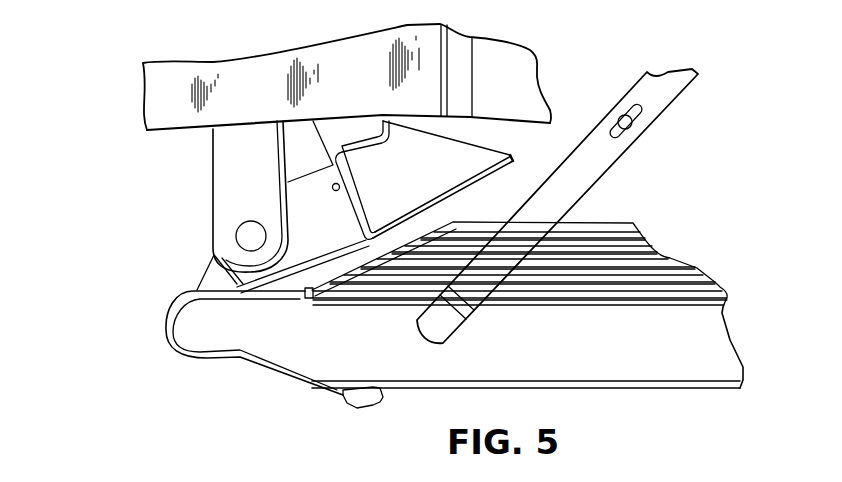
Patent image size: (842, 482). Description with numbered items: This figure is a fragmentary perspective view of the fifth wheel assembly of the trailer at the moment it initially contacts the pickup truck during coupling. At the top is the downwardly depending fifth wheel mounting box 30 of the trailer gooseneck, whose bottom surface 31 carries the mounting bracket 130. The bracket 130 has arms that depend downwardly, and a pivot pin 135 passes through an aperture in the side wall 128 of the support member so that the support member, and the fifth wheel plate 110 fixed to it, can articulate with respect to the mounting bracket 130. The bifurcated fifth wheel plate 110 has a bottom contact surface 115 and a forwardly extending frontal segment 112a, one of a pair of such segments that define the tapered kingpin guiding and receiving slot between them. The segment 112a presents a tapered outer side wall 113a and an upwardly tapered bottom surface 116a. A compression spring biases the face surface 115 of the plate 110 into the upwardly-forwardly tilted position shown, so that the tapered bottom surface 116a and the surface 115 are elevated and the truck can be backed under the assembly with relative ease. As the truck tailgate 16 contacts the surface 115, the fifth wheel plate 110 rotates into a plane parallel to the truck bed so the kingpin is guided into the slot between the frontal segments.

The fifth wheel mounting box 30 is at (175, 95).
The bottom surface of the fifth wheel mounting box 31 is at (181, 128).
The mounting bracket 130 is at (213, 178).
The pivot pin 135 is at (251, 221).
The side wall of the support member 128 is at (317, 230).
The tapered outer side wall 113a is at (424, 180).
The bottom surface of frontal segment 116a is at (472, 187).
The frontal segment 112a is at (508, 152).
The fifth wheel plate 110 is at (340, 247).
The bottom contact surface 115 is at (280, 273).
The truck tailgate 16 is at (352, 371).